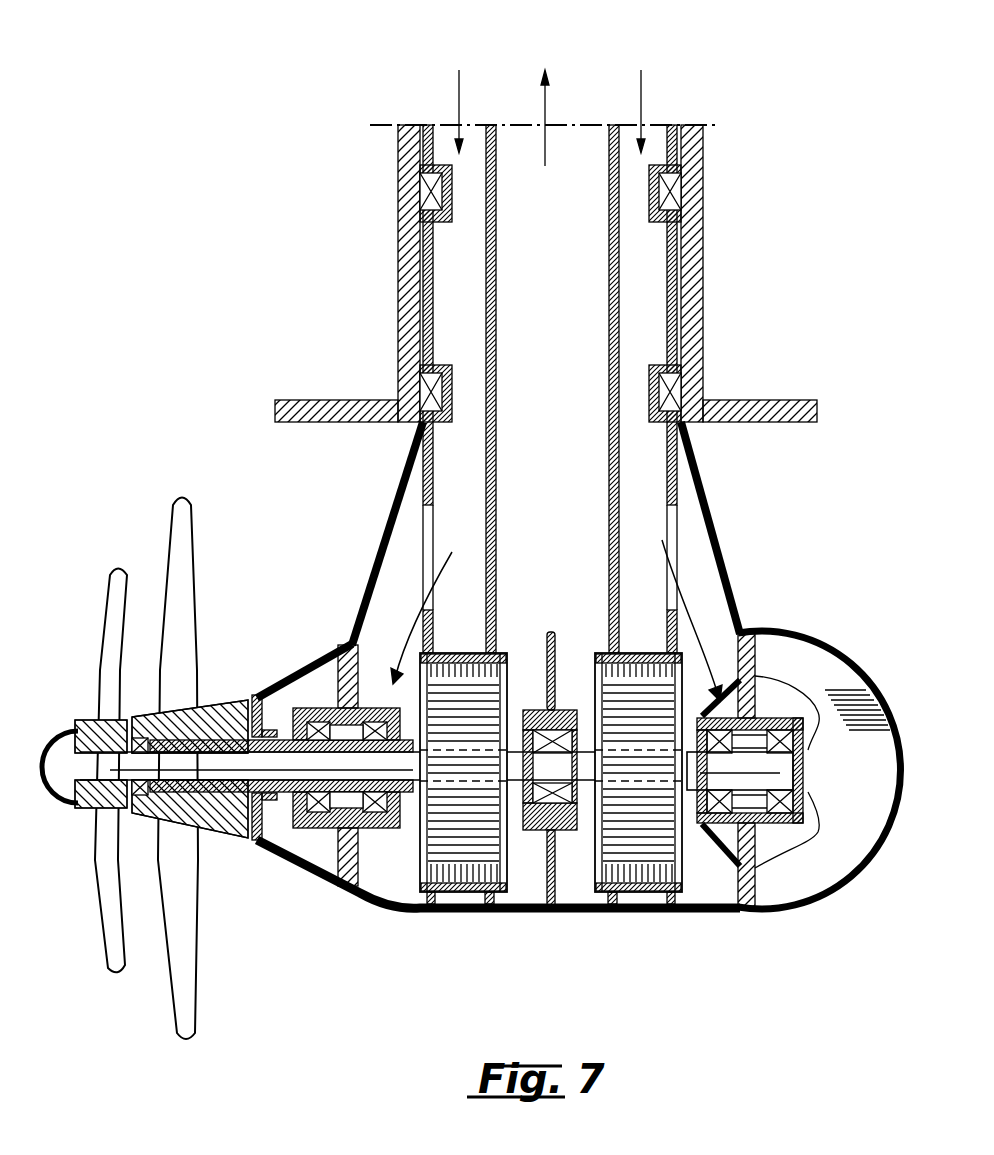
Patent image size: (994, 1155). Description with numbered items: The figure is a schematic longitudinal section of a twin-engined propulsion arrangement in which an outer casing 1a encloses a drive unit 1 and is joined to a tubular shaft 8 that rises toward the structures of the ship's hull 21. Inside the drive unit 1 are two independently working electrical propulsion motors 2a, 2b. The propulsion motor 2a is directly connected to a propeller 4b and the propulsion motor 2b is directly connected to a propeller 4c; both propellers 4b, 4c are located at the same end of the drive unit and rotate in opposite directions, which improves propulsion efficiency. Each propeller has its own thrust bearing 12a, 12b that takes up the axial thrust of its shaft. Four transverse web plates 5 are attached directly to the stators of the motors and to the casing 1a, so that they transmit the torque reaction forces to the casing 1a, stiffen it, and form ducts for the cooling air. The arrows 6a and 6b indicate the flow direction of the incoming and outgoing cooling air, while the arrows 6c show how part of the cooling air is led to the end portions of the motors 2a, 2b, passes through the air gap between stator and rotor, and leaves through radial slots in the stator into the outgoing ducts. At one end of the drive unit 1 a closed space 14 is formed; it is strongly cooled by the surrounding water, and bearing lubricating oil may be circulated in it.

The drive unit 1 is at (840, 550).
The outer casing 1a is at (702, 917).
The propulsion motor 2a is at (458, 837).
The propulsion motor 2b is at (635, 845).
The propeller 4b is at (183, 962).
The propeller 4c is at (113, 962).
The transverse web plates 5 is at (672, 493).
The arrows indicating cooling air flow direction 6a is at (459, 70).
The arrow indicating cooling air flow direction 6b is at (545, 102).
The arrows indicating cooling air path 6c is at (420, 613).
The tubular shaft 8 is at (672, 288).
The thrust bearing 12a is at (792, 828).
The thrust bearing 12b is at (375, 815).
The closed space 14 is at (823, 672).
The ship's hull structures 21 is at (758, 412).